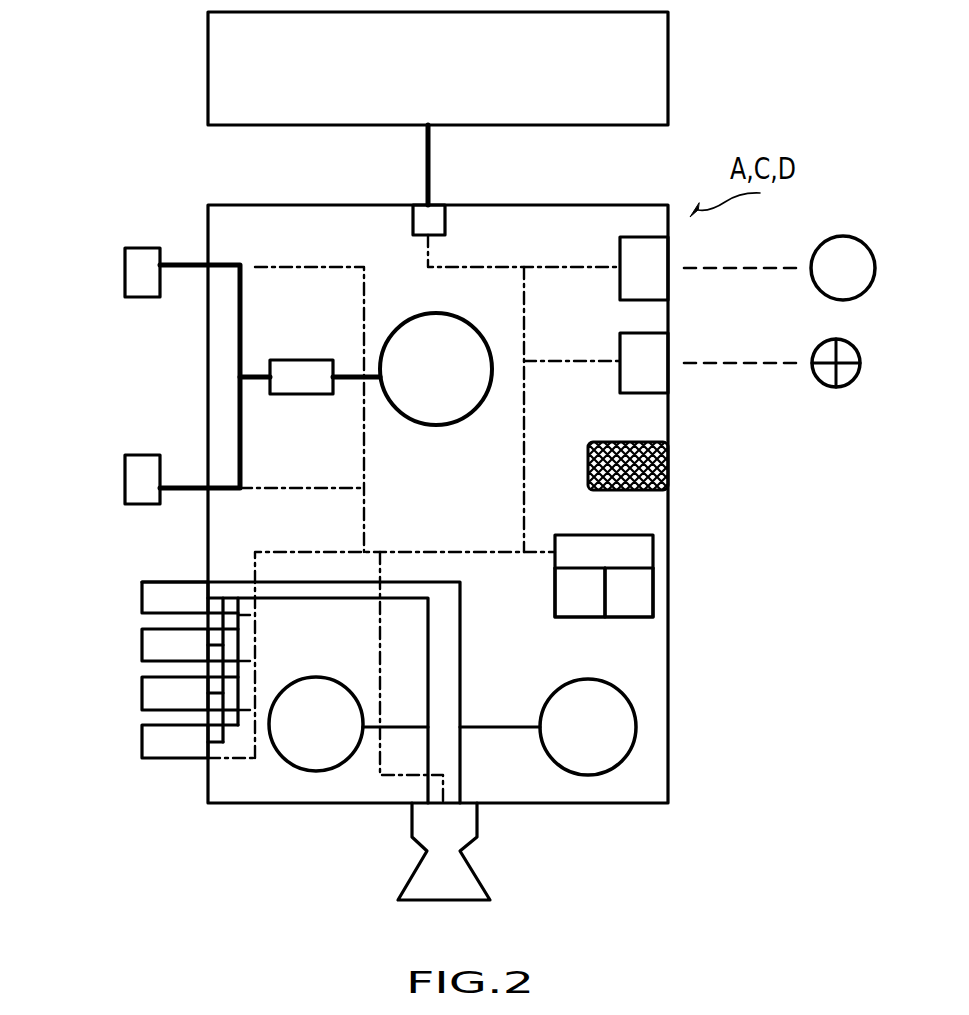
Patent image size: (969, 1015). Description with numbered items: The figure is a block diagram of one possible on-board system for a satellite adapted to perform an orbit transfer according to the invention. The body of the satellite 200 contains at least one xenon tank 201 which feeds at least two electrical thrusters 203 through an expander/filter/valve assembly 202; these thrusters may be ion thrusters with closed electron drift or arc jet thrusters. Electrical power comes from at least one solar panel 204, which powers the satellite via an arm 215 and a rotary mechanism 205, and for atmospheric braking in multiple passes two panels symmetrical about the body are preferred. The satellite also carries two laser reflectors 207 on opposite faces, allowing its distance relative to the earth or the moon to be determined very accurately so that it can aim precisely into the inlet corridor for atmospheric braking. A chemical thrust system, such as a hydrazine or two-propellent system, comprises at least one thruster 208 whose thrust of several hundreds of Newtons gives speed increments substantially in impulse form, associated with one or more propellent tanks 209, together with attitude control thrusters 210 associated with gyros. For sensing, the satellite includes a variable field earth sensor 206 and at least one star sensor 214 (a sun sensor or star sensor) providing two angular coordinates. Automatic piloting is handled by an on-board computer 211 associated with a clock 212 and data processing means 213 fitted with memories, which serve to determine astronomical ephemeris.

The body of the satellite 200 is at (207, 553).
The xenon tank 201 is at (468, 420).
The expander/filter/valve assembly 202 is at (307, 394).
The electrical thrusters 203 is at (125, 280).
The solar panel 204 is at (208, 72).
The rotary mechanism 205 is at (413, 225).
The variable field earth sensor 206 is at (665, 385).
The laser reflectors 207 is at (668, 462).
The thruster 208 is at (470, 882).
The propellent tanks 209 is at (318, 762).
The attitude control thrusters 210 is at (142, 598).
The on-board computer 211 is at (645, 550).
The clock 212 is at (645, 590).
The data processing means 213 is at (570, 607).
The star sensor 214 is at (668, 257).
The arm 215 is at (426, 160).